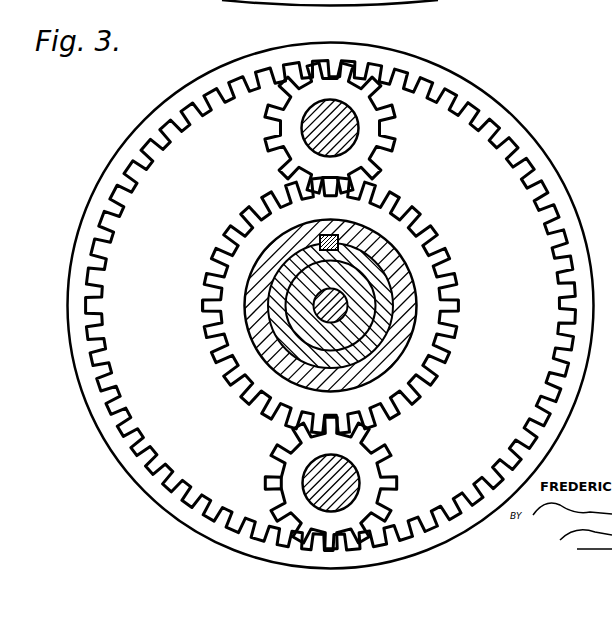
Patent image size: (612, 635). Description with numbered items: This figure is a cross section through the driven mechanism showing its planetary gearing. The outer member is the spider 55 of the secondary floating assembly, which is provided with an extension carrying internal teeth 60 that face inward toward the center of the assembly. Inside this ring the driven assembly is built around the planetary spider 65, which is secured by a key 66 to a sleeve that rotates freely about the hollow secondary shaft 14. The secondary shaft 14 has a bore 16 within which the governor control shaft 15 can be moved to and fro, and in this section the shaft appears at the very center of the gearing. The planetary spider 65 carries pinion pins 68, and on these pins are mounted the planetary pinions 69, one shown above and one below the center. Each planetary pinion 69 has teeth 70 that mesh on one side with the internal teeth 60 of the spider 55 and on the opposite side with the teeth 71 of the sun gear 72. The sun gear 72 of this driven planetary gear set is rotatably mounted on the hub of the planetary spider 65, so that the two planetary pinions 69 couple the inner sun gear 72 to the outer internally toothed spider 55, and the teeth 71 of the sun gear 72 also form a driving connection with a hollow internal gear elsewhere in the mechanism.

The spider 55 is at (108, 168).
The internal teeth 60 is at (102, 254).
The planetary spider 65 is at (278, 267).
The key 66 is at (340, 250).
The sun gear 72 is at (262, 277).
The teeth of the sun gear 71 is at (212, 278).
The bore 16 is at (372, 283).
The governor control shaft 15 is at (345, 263).
The secondary shaft 14 is at (395, 296).
The pinion pins 68 is at (357, 136).
The planetary pinions 69 is at (267, 133).
The teeth 70 is at (284, 150).